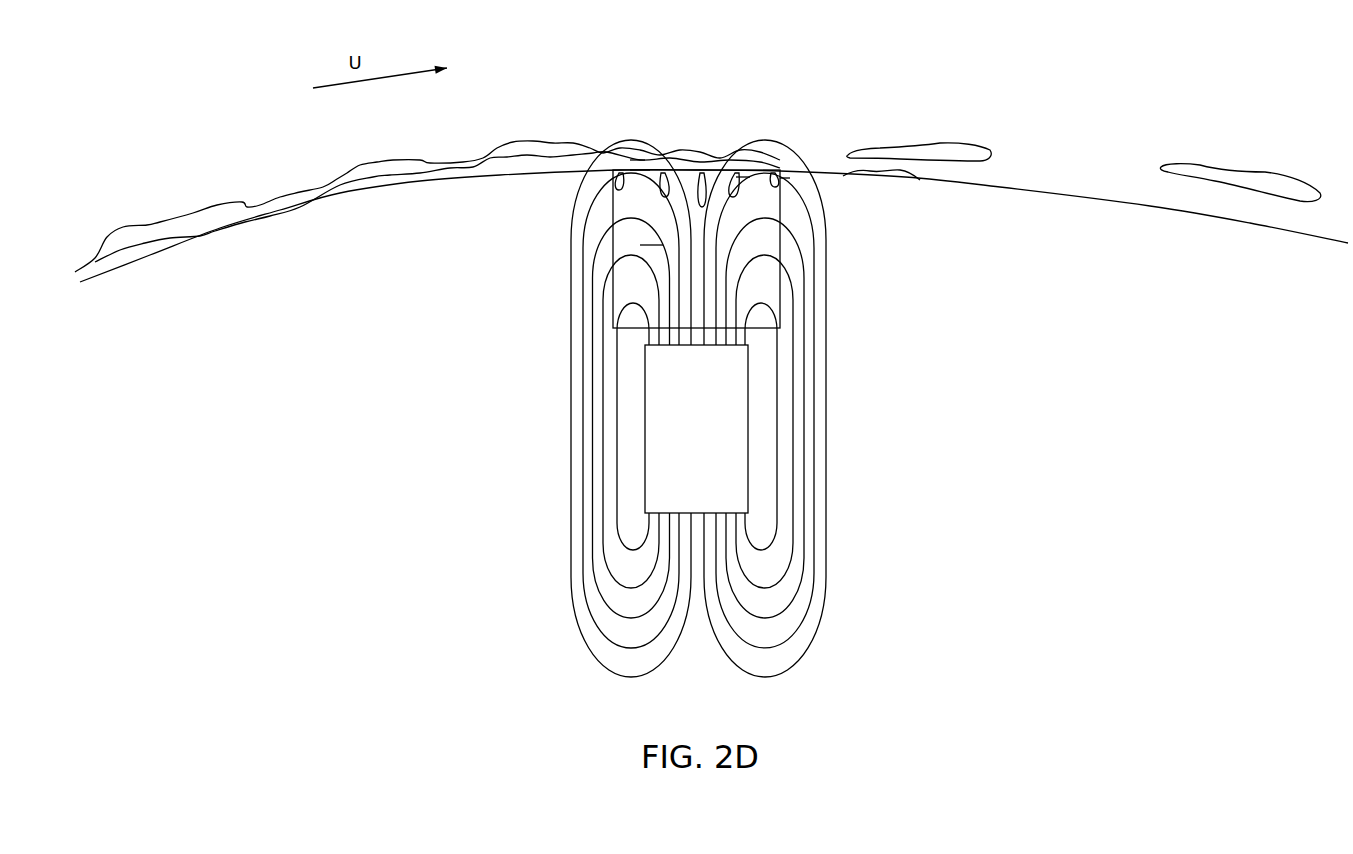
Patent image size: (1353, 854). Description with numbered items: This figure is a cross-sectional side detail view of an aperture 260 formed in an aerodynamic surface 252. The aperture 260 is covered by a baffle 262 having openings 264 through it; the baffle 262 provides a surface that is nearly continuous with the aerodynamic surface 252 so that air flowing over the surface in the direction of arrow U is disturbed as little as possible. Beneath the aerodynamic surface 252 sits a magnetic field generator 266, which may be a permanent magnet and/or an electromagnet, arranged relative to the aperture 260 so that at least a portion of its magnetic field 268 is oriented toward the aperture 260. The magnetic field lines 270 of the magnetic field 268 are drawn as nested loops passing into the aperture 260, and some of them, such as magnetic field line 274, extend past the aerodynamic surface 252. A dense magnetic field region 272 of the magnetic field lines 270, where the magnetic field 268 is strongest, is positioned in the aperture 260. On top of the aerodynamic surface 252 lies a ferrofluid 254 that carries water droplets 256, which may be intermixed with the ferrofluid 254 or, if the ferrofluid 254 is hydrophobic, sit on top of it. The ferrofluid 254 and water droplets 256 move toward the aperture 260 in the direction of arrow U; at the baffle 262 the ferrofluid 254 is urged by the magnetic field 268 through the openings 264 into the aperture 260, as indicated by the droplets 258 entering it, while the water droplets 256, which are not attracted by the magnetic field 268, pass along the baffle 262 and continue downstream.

The aerodynamic surface 252 is at (1038, 189).
The ferrofluid 254 is at (440, 178).
The water droplets 256 is at (148, 228).
The droplets 258 is at (665, 180).
The aperture 260 is at (785, 180).
The baffle 262 is at (640, 172).
The openings 264 is at (637, 160).
The magnetic field generator 266 is at (682, 439).
The magnetic field 268 is at (830, 292).
The magnetic field lines 270 is at (826, 248).
The dense magnetic field region 272 is at (663, 245).
The magnetic field line 274 is at (797, 147).